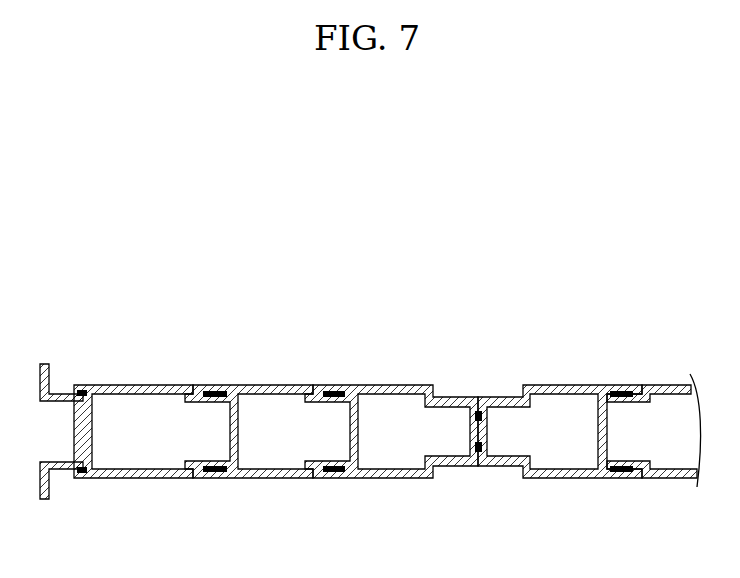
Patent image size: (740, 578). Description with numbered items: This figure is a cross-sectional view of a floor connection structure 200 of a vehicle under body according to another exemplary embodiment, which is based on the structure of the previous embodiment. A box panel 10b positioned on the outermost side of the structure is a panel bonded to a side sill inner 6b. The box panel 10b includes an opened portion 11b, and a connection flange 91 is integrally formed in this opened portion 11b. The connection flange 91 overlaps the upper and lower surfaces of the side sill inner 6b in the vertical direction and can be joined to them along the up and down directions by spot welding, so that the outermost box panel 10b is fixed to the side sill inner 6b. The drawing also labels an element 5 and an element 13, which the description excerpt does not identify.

The floor connection structure 200 is at (342, 244).
The bracket 5 is at (58, 375).
The side sill inner 6b is at (83, 430).
The connection flange 91 is at (83, 388).
The box panel 10b is at (223, 371).
The opened portion 11b is at (145, 372).
The sealing member 13 is at (198, 377).